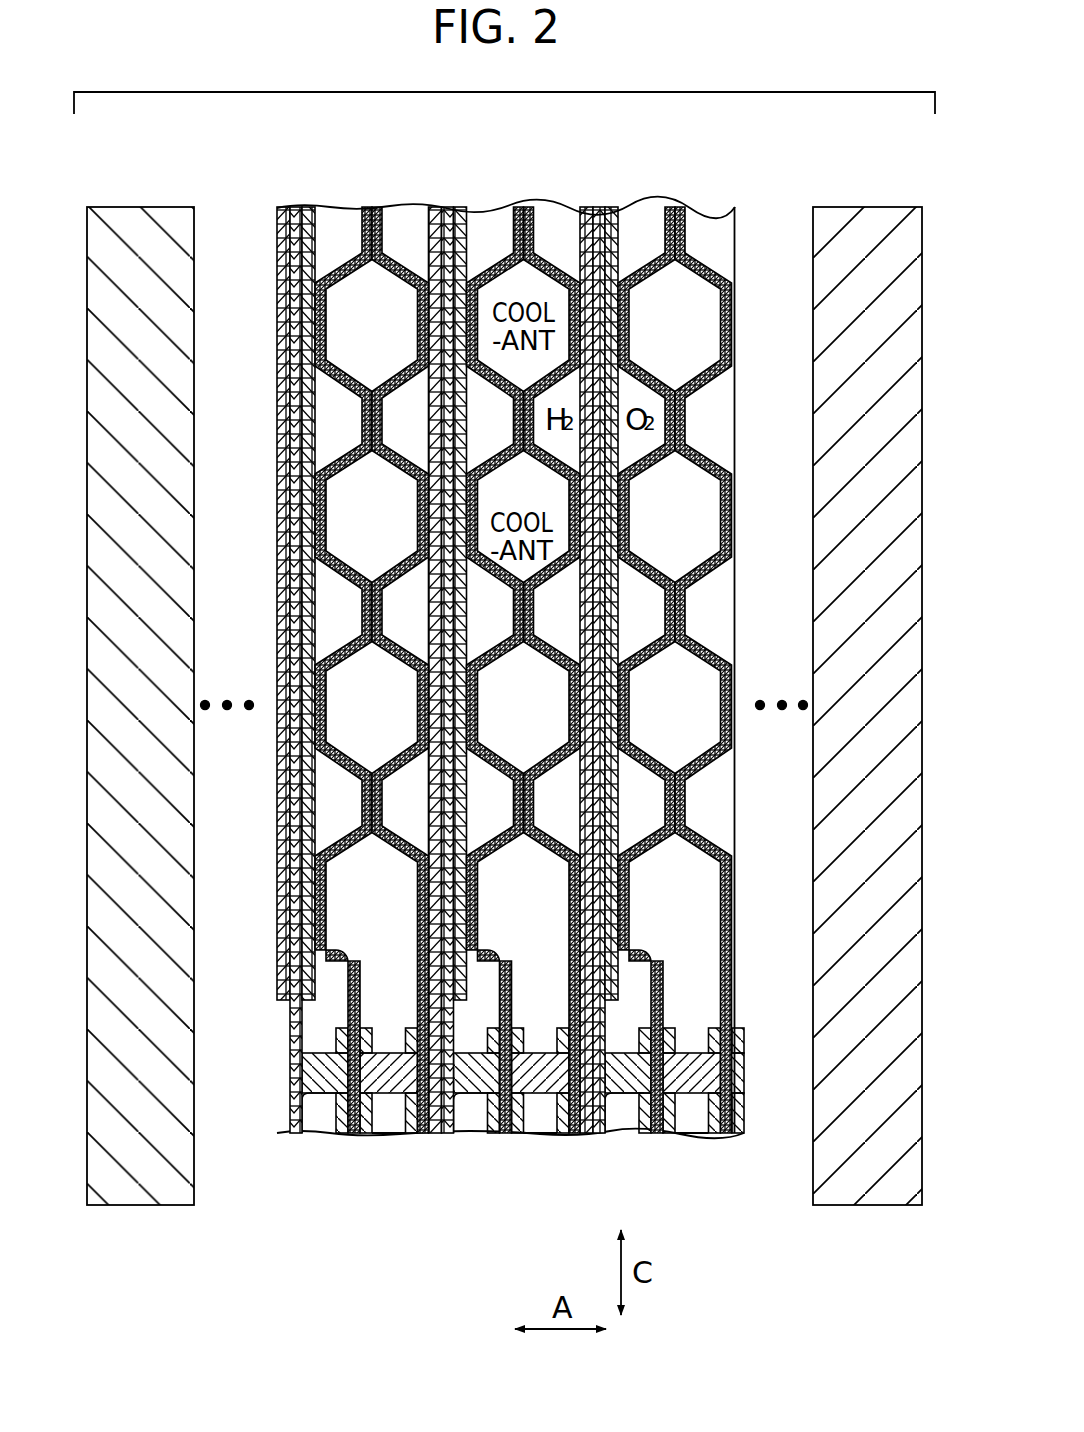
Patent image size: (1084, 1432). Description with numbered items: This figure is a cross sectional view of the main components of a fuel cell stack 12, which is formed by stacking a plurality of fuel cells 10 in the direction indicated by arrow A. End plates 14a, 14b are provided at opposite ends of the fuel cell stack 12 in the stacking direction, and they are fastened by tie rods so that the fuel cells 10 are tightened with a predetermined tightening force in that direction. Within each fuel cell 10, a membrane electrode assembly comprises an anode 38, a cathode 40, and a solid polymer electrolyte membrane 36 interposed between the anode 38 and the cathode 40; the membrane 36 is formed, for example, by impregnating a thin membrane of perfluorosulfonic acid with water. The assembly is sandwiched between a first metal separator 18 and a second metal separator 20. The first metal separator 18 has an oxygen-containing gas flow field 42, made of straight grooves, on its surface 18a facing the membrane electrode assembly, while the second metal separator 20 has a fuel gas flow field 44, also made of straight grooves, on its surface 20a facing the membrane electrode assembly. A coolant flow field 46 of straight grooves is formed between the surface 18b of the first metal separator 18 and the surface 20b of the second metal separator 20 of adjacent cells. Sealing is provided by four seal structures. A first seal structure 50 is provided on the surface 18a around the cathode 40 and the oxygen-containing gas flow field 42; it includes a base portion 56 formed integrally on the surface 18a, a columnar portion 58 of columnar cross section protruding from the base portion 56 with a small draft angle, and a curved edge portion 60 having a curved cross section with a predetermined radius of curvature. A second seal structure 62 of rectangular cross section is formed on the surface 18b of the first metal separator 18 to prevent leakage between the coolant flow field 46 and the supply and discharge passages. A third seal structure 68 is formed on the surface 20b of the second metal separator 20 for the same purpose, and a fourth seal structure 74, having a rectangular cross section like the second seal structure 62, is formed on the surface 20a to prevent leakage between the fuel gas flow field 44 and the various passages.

The fuel cell 10 is at (302, 193).
The fuel cell stack 12 is at (252, 146).
The end plate 14a is at (878, 1197).
The end plate 14b is at (142, 1197).
The first metal separator 18 is at (672, 670).
The surface of the first metal separator 18a is at (612, 524).
The surface of the first metal separator 18b is at (628, 496).
The second metal separator 20 is at (524, 670).
The surface of the second metal separator 20a is at (577, 735).
The surface of the second metal separator 20b is at (573, 697).
The solid polymer electrolyte membrane 36 is at (599, 207).
The anode 38 is at (588, 207).
The cathode 40 is at (610, 207).
The oxygen-containing gas flow field 42 is at (640, 715).
The fuel gas flow field 44 is at (560, 715).
The coolant flow field 46 is at (670, 527).
The first seal structure 50 is at (635, 1133).
The base portion 56 is at (583, 1004).
The columnar portion 58 is at (473, 1053).
The curved edge portion 60 is at (531, 1055).
The second seal structure 62 is at (683, 1131).
The third seal structure 68 is at (565, 1141).
The fourth seal structure 74 is at (590, 1131).